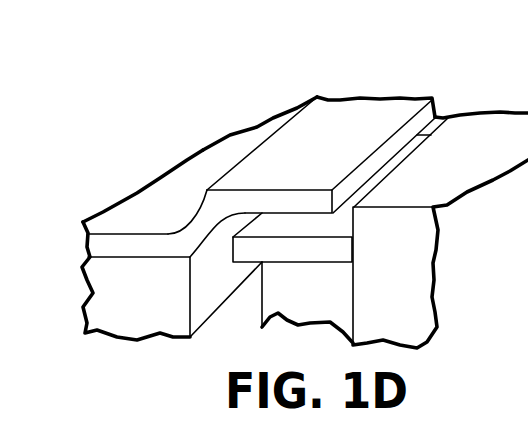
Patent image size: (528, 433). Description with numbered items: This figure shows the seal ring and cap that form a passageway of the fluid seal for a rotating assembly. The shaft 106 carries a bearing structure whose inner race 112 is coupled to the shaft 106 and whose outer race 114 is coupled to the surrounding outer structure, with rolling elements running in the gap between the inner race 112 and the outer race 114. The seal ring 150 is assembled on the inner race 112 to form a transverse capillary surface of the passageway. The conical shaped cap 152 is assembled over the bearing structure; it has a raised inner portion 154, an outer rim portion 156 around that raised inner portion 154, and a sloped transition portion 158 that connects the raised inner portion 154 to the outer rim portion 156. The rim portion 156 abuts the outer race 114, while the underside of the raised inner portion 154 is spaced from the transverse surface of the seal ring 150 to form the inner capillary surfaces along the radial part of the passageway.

The shaft 106 is at (408, 281).
The inner race 112 is at (317, 303).
The outer race 114 is at (168, 303).
The seal ring 150 is at (322, 235).
The conical shaped cap 152 is at (259, 139).
The raised inner portion 154 is at (362, 124).
The outer rim portion 156 is at (146, 215).
The sloped transition portion 158 is at (207, 190).